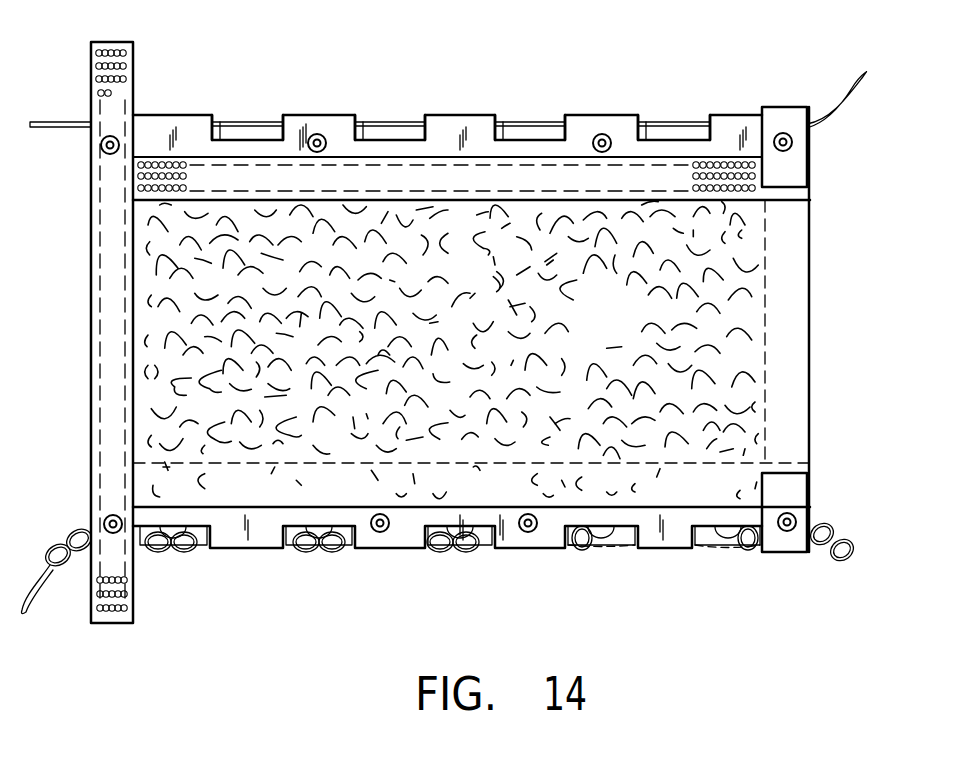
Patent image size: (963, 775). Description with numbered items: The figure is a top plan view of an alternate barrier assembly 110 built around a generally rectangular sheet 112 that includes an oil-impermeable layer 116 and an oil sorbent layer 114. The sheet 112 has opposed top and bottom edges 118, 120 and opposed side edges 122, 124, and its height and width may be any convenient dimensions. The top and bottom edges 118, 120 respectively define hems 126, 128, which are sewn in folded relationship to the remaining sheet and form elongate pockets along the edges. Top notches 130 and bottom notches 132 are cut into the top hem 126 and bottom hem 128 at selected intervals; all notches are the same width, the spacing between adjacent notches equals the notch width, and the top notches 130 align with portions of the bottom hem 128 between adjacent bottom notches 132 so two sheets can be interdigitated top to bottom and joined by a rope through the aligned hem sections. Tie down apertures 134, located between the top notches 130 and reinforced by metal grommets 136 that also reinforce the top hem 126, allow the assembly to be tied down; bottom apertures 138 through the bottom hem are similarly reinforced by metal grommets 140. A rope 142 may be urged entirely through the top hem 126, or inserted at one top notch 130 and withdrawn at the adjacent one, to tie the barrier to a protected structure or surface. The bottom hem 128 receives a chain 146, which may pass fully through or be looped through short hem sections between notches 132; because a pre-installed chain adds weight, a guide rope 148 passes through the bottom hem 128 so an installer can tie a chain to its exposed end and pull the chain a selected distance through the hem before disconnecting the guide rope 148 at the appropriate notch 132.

The barrier assembly 110 is at (648, 44).
The sheet 112 is at (598, 113).
The oil sorbent layer 114 is at (637, 334).
The oil-impermeable layer 116 is at (718, 117).
The top edge 118 is at (347, 113).
The bottom edge 120 is at (548, 550).
The side edge 122 is at (91, 259).
The side edge 124 is at (812, 266).
The top hem 126 is at (308, 130).
The bottom hem 128 is at (525, 540).
The top notches 130 is at (250, 138).
The bottom notches 132 is at (183, 528).
The tie down apertures 134 is at (317, 134).
The metal grommets 136 is at (325, 151).
The bottom apertures 138 is at (384, 533).
The metal grommets 140 is at (382, 517).
The rope 142 is at (422, 118).
The chain 146 is at (173, 560).
The guide rope 148 is at (22, 612).